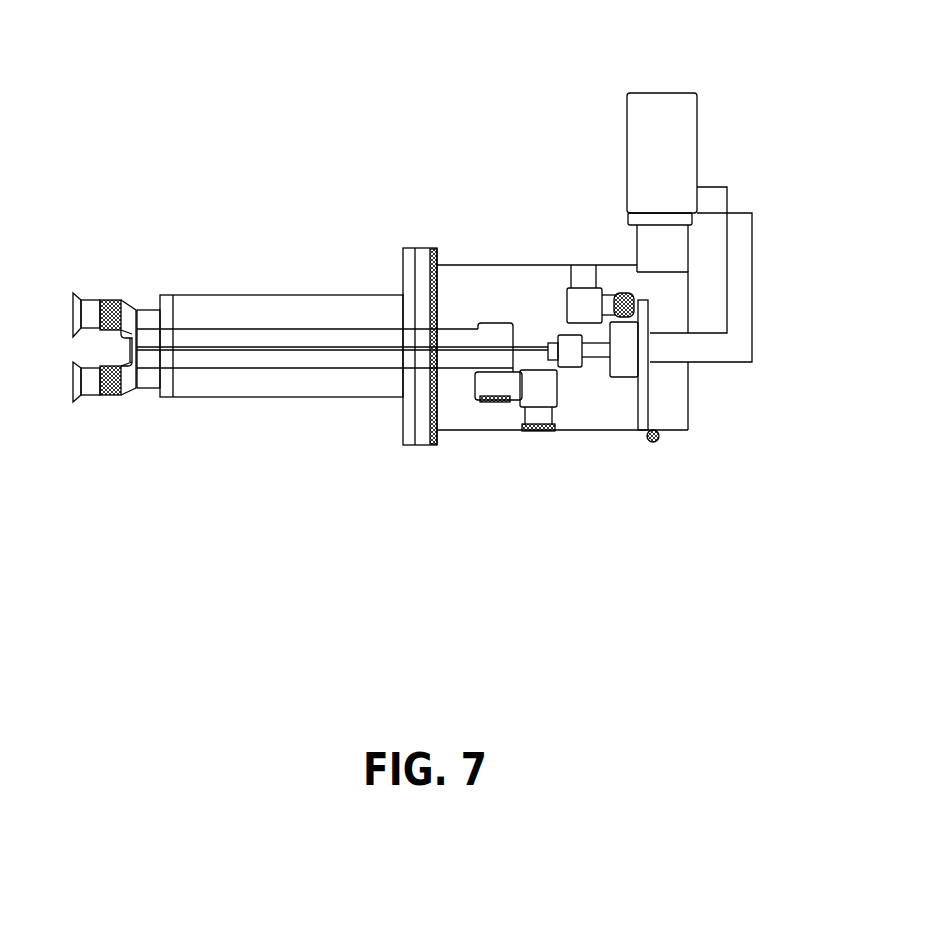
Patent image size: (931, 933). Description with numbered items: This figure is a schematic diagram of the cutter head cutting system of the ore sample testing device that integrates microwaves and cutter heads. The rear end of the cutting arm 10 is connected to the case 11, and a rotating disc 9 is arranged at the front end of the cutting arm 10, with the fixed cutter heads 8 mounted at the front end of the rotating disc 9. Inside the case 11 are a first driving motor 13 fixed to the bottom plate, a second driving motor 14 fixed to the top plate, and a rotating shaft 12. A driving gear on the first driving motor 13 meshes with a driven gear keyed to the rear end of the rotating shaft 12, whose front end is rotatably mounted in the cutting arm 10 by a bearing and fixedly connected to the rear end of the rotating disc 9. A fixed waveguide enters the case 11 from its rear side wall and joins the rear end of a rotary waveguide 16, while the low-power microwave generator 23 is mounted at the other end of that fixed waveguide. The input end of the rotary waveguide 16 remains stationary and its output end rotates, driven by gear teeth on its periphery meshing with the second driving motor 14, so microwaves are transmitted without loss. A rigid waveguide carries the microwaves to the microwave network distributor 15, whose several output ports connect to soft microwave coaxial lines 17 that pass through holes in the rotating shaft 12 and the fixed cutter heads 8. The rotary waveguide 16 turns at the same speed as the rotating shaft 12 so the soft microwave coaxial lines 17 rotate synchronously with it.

The fixed cutter heads 8 is at (92, 403).
The rotating disc 9 is at (147, 388).
The cutting arm 10 is at (240, 383).
The case 11 is at (683, 430).
The rotating shaft 12 is at (273, 342).
The first driving motor 13 is at (532, 398).
The second driving motor 14 is at (575, 312).
The microwave network distributor 15 is at (571, 357).
The rotary waveguide 16 is at (625, 355).
The soft microwave coaxial lines 17 is at (210, 350).
The low-power microwave generator 23 is at (668, 182).